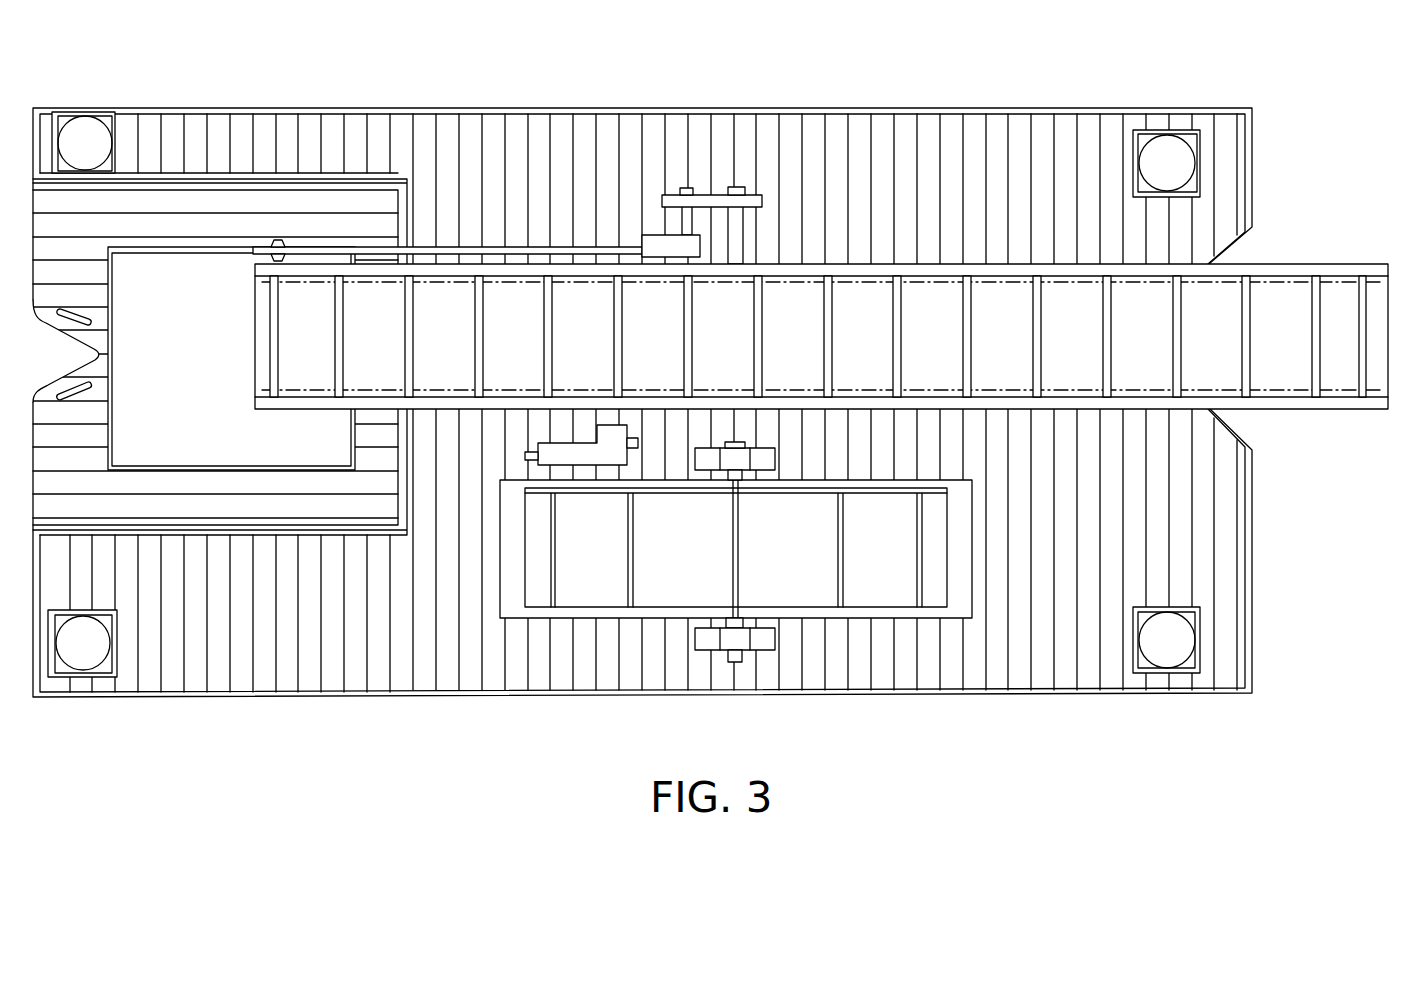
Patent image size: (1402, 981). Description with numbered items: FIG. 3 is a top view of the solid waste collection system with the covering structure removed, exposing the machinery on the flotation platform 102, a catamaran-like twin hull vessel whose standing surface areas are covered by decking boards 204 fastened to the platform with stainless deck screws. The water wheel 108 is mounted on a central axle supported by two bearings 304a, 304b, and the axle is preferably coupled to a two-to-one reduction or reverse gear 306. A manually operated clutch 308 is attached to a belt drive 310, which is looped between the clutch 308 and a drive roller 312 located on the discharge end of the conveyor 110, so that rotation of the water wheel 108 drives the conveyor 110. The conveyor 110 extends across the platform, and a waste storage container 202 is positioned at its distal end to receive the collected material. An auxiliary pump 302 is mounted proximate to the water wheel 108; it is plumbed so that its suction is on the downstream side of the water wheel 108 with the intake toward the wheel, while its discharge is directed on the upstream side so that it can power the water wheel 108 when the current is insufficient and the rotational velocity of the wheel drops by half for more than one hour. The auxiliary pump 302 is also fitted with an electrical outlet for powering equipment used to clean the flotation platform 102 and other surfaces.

The flotation platform 102 is at (638, 437).
The water wheel 108 is at (805, 560).
The conveyor 110 is at (1287, 410).
The waste storage container 202 is at (190, 431).
The decking boards 204 is at (333, 668).
The auxiliary pump 302 is at (583, 466).
The bearing 304a is at (762, 652).
The bearing 304b is at (700, 471).
The reduction or reverse gear 306 is at (712, 198).
The manually operated clutch 308 is at (657, 234).
The belt drive 310 is at (472, 247).
The drive roller 312 is at (279, 241).